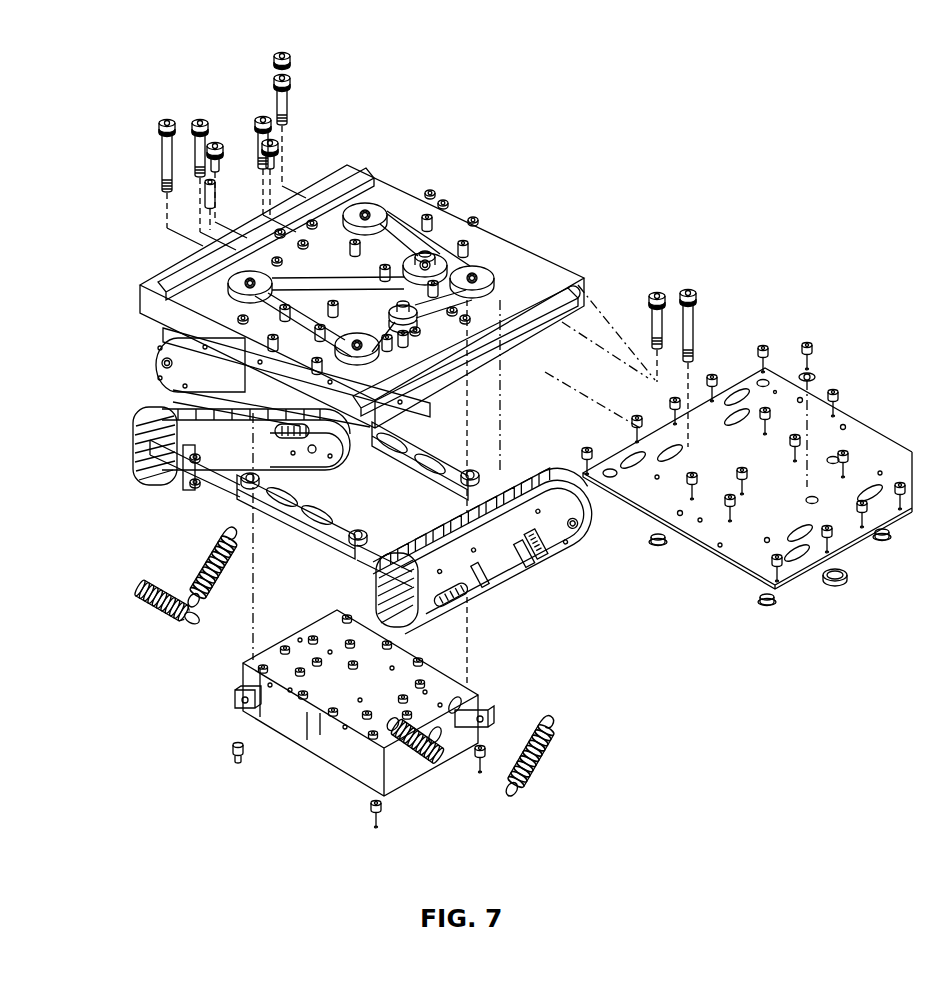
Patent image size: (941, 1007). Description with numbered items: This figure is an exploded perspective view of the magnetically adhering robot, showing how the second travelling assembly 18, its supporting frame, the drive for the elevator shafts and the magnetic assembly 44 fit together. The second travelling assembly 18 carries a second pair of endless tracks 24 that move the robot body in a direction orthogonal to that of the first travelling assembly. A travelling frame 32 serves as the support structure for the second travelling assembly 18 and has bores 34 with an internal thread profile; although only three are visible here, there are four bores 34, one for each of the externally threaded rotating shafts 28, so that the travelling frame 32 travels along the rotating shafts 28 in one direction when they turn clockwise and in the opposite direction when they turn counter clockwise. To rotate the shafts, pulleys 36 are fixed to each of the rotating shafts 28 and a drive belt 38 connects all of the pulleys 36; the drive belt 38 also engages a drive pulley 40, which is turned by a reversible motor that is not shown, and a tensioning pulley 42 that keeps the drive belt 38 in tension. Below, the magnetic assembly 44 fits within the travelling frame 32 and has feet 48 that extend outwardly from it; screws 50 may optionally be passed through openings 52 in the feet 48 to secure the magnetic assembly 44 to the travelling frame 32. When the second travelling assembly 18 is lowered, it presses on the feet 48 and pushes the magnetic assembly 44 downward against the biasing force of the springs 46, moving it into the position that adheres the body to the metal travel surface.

The second travelling assembly 18 is at (361, 493).
The second pair of endless tracks 24 is at (140, 478).
The rotating shafts 28 is at (368, 208).
The travelling frame 32 is at (313, 548).
The bores 34 is at (358, 528).
The pulleys 36 is at (380, 208).
The drive belt 38 is at (258, 317).
The drive pulley 40 is at (443, 262).
The tensioning pulley 42 is at (423, 317).
The magnetic assembly 44 is at (283, 735).
The springs 46 is at (550, 755).
The feet 48 is at (228, 695).
The screws 50 is at (236, 755).
The openings 52 is at (237, 702).